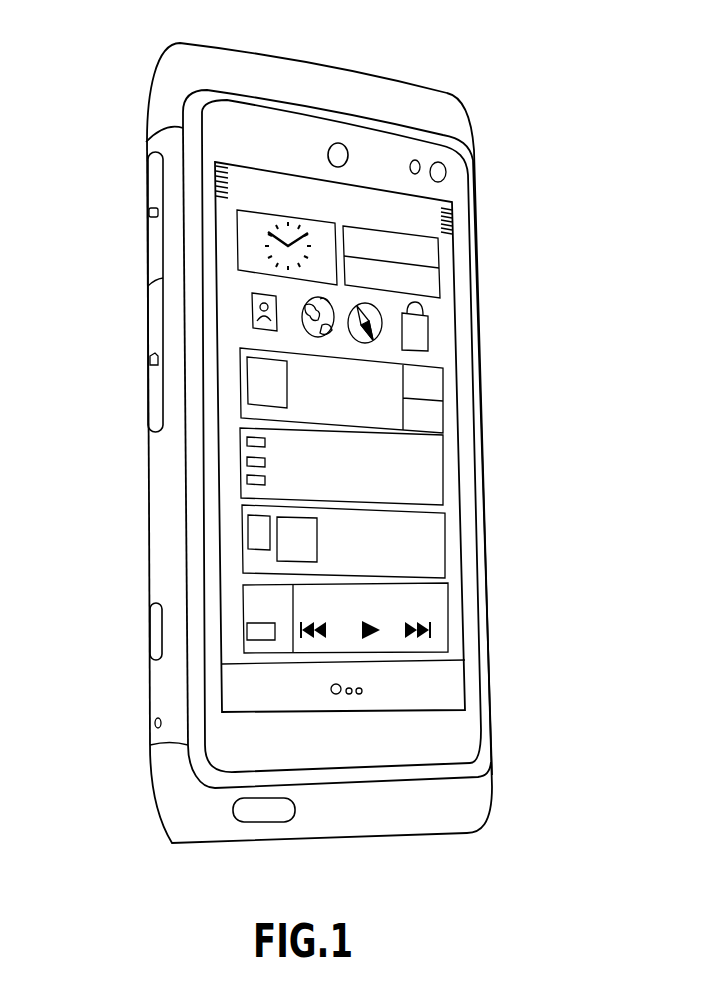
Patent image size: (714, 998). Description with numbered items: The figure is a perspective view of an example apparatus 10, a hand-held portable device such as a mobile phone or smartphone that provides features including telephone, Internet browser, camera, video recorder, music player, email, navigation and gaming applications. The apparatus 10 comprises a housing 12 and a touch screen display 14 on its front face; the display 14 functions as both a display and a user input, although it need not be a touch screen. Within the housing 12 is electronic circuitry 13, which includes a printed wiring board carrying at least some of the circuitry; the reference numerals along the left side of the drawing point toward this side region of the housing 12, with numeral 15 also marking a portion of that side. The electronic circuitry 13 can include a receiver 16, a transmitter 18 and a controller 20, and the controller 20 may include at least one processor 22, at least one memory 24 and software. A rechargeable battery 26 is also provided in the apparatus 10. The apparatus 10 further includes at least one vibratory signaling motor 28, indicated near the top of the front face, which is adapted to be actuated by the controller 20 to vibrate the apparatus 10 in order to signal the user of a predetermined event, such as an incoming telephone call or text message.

The apparatus 10 is at (570, 118).
The housing 12 is at (488, 790).
The electronic circuitry 13 is at (167, 497).
The touch screen display 14 is at (452, 552).
The side surface lower portion 15 is at (160, 534).
The receiver 16 is at (155, 176).
The transmitter 18 is at (154, 251).
The controller 20 is at (148, 350).
The processor 22 is at (154, 405).
The memory 24 is at (160, 453).
The rechargeable battery 26 is at (153, 639).
The vibratory signaling motor 28 is at (344, 150).